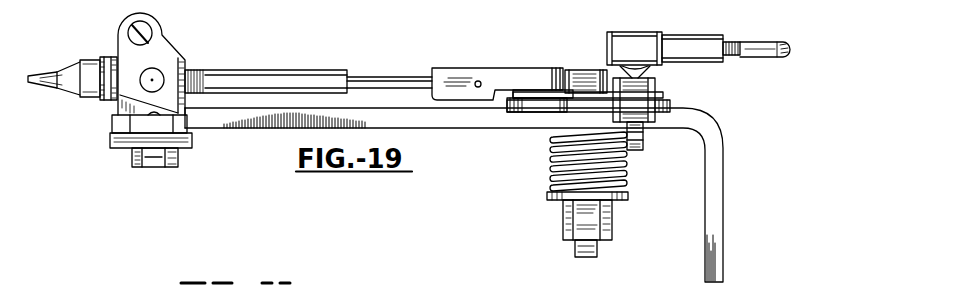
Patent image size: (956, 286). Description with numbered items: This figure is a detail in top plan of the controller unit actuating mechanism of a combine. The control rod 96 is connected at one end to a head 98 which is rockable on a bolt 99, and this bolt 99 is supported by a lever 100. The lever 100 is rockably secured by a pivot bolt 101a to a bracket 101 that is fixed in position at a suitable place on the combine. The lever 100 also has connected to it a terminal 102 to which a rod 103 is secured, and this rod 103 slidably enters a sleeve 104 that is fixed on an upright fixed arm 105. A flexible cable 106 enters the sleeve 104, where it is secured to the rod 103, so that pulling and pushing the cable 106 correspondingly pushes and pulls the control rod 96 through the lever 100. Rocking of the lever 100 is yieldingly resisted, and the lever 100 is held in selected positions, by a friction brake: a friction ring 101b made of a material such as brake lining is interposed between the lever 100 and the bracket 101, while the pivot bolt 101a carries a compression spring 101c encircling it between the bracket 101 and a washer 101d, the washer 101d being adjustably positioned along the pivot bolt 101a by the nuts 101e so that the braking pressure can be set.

The control rod 96 is at (758, 43).
The head 98 is at (687, 47).
The bolt 99 is at (640, 134).
The lever 100 is at (580, 94).
The bracket 101 is at (453, 122).
The pivot bolt 101a is at (586, 78).
The friction ring 101b is at (670, 106).
The compression spring 101c is at (550, 172).
The washer 101d is at (550, 197).
The nuts 101e is at (608, 216).
The terminal 102 is at (504, 78).
The rod 103 is at (397, 80).
The sleeve 104 is at (265, 83).
The upright fixed arm 105 is at (192, 140).
The flexible cable 106 is at (38, 84).